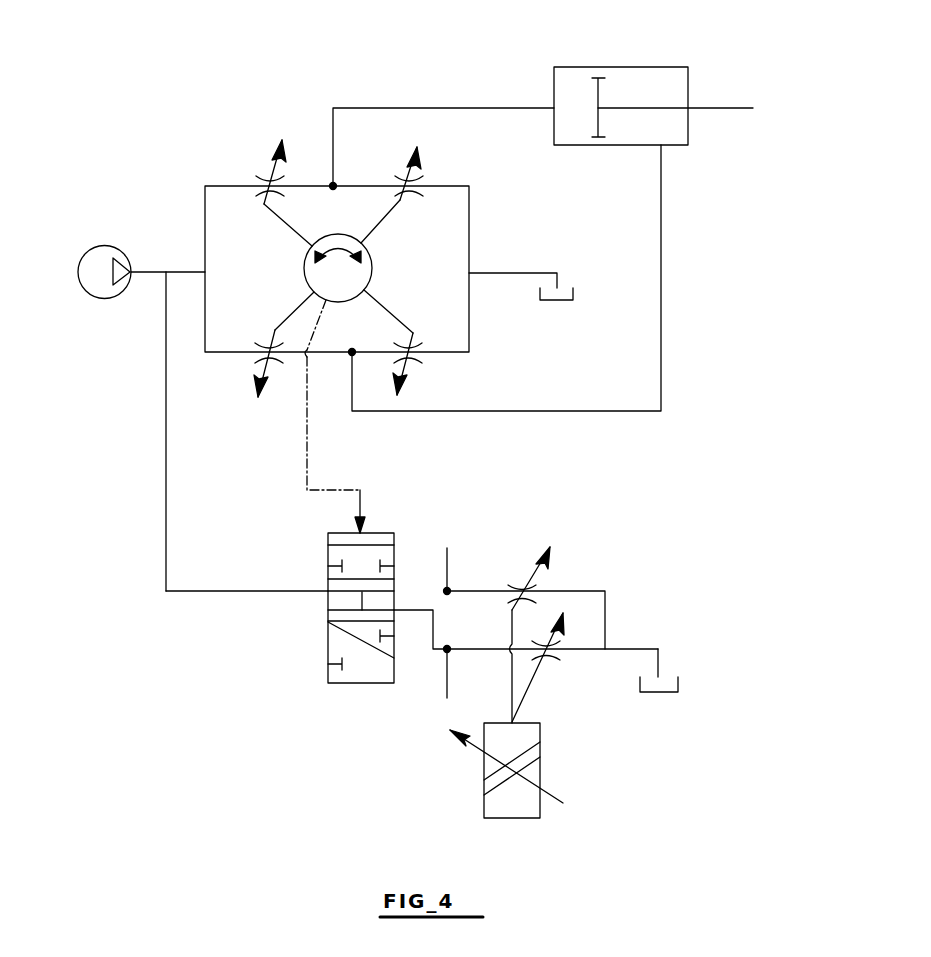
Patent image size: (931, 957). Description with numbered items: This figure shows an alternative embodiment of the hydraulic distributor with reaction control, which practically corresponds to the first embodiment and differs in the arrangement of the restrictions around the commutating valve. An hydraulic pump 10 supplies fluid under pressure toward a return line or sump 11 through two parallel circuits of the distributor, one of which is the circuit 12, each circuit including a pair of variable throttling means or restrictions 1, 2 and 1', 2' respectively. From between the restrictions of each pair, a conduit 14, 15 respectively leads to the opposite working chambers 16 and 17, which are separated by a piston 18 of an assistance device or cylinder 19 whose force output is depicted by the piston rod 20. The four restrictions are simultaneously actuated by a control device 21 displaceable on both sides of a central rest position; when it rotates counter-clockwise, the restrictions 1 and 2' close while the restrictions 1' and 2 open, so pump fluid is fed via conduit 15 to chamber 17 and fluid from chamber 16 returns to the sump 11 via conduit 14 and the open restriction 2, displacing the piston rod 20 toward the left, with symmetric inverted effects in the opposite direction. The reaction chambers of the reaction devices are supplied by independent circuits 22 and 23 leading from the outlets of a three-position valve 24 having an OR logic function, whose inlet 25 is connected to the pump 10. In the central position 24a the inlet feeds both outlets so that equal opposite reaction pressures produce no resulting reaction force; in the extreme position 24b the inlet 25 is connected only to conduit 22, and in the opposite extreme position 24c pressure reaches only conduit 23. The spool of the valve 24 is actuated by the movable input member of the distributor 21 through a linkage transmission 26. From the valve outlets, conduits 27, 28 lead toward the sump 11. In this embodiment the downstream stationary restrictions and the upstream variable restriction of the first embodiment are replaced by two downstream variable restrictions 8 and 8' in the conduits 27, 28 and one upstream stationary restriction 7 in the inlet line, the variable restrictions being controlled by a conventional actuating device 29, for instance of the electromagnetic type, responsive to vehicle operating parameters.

The variable throttling means or restriction 1 is at (284, 180).
The variable throttling means or restriction 1' is at (271, 347).
The variable throttling means or restriction 2 is at (400, 186).
The variable throttling means or restriction 2' is at (395, 344).
The stationary restriction 7 is at (171, 436).
The variable restriction 8 is at (529, 635).
The variable restriction 8' is at (539, 667).
The hydraulic pump 10 is at (98, 283).
The return line or sump 11 is at (593, 483).
The parallel circuit of the distributor 12 is at (450, 184).
The conduit 14 is at (480, 105).
The conduit 15 is at (662, 262).
The working chamber 16 is at (569, 125).
The working chamber 17 is at (664, 88).
The piston 18 is at (597, 80).
The assistance device or cylinder 19 is at (650, 65).
The piston rod 20 is at (725, 103).
The control device 21 is at (360, 273).
The independent circuit 22 is at (520, 585).
The independent circuit 23 is at (526, 654).
The three-position valve 24 is at (323, 637).
The central position 24a is at (338, 602).
The extreme position 24b is at (333, 553).
The extreme position 24c is at (335, 645).
The inlet 25 is at (233, 569).
The linkage transmission 26 is at (308, 447).
The conduit 27 is at (587, 592).
The conduit 28 is at (625, 653).
The actuating device 29 is at (518, 770).